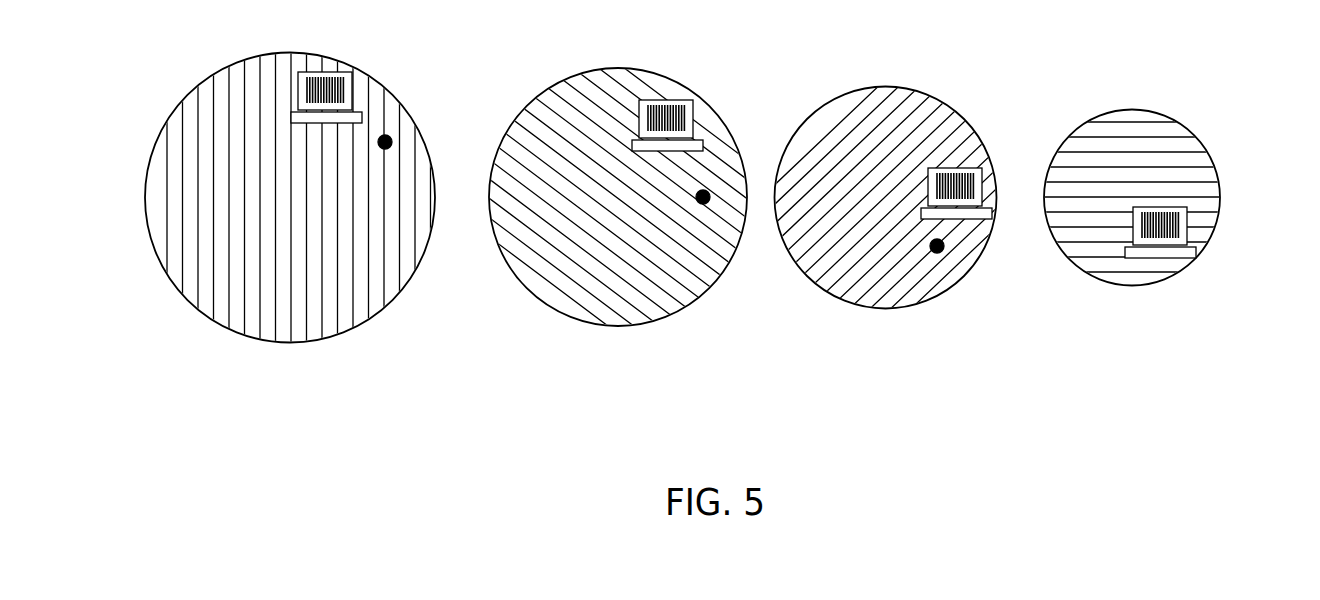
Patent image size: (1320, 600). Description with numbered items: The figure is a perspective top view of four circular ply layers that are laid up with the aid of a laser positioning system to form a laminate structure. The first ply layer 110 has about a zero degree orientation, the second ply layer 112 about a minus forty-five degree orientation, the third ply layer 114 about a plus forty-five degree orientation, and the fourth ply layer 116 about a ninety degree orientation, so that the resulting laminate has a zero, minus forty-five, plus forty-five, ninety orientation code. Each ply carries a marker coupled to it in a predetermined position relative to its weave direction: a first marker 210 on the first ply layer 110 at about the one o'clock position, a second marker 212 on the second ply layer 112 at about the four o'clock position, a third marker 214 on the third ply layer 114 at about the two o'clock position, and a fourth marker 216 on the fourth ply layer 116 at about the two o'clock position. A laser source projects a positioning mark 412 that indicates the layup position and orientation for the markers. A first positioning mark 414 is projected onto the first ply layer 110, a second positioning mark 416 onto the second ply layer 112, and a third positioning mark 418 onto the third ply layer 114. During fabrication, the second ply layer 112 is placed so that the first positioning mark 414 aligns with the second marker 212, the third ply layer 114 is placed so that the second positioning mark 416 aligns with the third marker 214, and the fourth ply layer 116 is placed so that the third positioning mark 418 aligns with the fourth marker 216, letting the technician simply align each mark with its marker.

The first ply layer 110 is at (220, 68).
The second ply layer 112 is at (587, 72).
The third ply layer 114 is at (845, 93).
The fourth ply layer 116 is at (1085, 122).
The first marker 210 is at (315, 72).
The second marker 212 is at (667, 100).
The third marker 214 is at (967, 168).
The fourth marker 216 is at (1185, 207).
The positioning mark 412 is at (395, 128).
The first positioning mark 414 is at (385, 135).
The second positioning mark 416 is at (707, 192).
The third positioning mark 418 is at (945, 248).